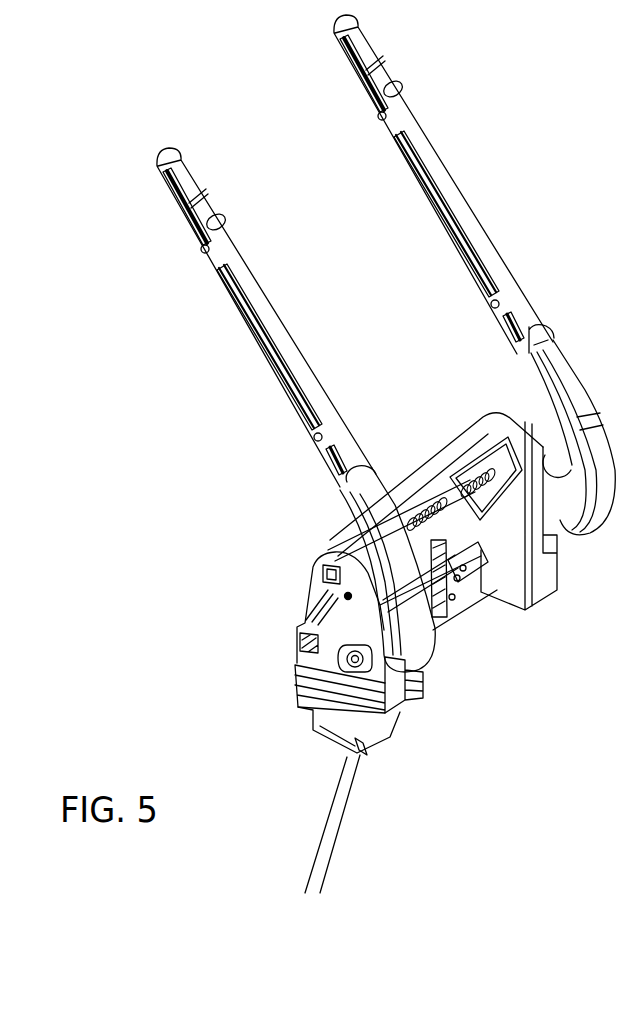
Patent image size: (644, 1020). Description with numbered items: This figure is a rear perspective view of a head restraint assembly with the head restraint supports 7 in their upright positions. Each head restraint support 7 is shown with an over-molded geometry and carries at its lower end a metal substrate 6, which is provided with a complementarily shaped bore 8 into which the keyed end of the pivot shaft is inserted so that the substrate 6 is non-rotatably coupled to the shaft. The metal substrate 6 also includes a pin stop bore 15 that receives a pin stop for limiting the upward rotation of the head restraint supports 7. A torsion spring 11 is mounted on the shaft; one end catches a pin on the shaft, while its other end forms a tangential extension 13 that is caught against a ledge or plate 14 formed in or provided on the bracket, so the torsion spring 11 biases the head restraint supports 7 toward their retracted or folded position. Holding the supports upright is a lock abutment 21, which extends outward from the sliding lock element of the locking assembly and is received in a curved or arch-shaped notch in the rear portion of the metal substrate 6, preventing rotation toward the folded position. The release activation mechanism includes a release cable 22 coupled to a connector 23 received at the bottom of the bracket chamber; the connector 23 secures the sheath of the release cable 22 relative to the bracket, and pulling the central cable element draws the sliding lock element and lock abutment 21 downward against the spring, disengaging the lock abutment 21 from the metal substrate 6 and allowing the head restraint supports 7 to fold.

The head restraint support 7 is at (240, 331).
The metal substrate 6 is at (347, 630).
The torsion spring 11 is at (479, 478).
The bore 8 is at (323, 575).
The pin stop bore 15 is at (345, 596).
The lock abutment 21 is at (346, 648).
The tangential extension 13 is at (462, 590).
The ledge or plate 14 is at (480, 580).
The connector 23 is at (372, 742).
The release cable 22 is at (332, 803).